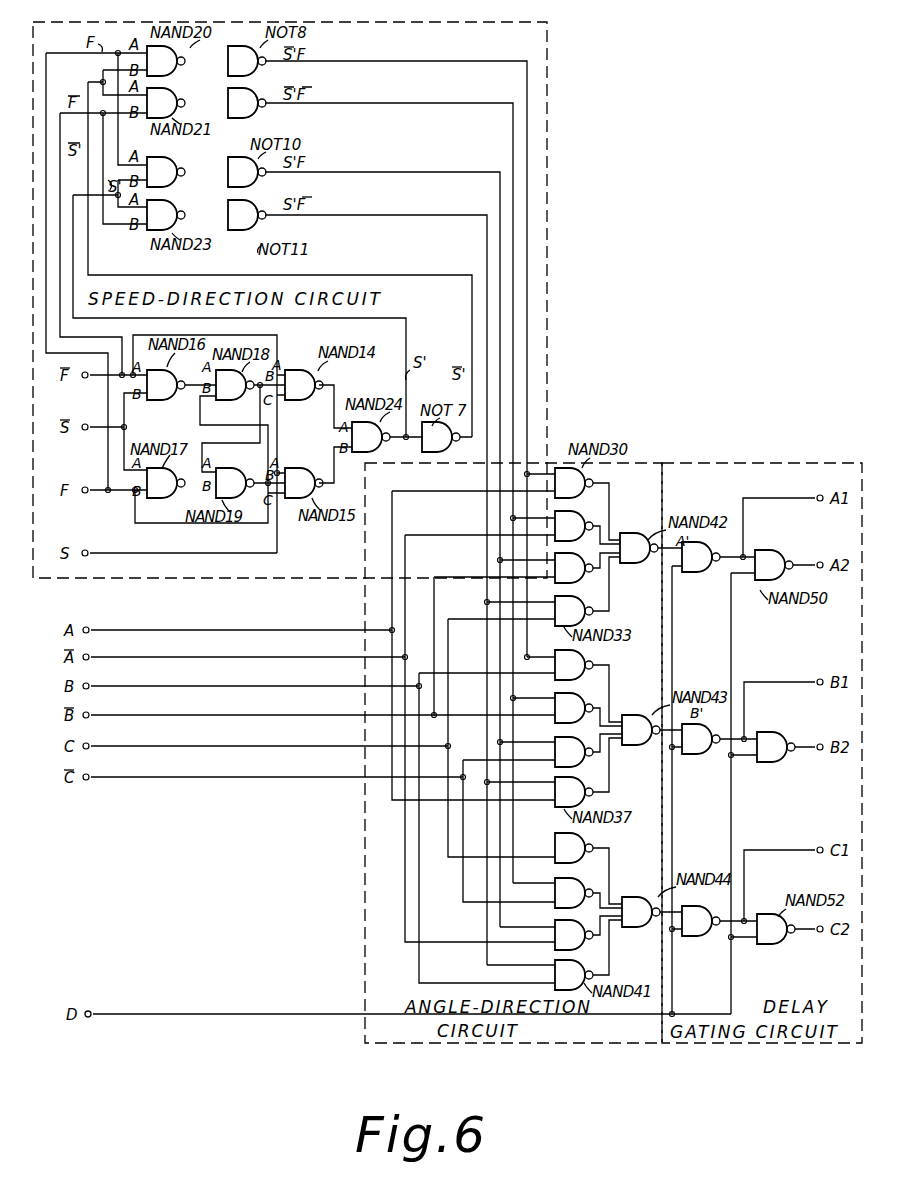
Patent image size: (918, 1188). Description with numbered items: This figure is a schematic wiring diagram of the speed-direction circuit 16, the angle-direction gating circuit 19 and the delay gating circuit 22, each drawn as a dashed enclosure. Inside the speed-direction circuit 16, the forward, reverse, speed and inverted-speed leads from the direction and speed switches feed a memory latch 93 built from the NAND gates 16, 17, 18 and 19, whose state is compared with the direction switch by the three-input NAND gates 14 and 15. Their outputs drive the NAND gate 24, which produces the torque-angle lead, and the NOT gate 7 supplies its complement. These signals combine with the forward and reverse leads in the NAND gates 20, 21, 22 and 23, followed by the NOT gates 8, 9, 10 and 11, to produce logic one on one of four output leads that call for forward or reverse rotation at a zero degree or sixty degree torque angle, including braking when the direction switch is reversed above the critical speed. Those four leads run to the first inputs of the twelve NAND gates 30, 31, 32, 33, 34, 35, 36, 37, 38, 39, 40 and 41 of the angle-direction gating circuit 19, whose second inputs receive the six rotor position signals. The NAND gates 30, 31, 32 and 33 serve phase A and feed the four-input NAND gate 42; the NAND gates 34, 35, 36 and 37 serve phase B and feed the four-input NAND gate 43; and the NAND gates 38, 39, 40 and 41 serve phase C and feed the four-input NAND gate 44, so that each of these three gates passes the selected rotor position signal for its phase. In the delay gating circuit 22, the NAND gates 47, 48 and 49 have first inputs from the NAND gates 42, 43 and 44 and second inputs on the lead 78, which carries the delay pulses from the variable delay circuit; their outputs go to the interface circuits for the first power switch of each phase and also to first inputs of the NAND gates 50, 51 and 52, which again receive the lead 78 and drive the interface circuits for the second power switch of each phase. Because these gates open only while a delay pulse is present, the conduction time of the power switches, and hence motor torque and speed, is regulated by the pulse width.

The NOT gate NOT7 7 is at (441, 437).
The NOT gate NOT8 8 is at (247, 61).
The NOT gate NOT9 9 is at (247, 103).
The NOT gate NOT10 10 is at (247, 172).
The NOT gate NOT11 11 is at (247, 215).
The three-input NAND gate NAND14 14 is at (304, 385).
The three-input NAND gate NAND15 15 is at (304, 483).
The speed-direction circuit 16 is at (578, 255).
The NAND gate NAND17 17 is at (166, 483).
The NAND gate NAND18 18 is at (235, 385).
The angle-direction gating circuit 19 is at (436, 1074).
The NAND gate NAND20 20 is at (166, 61).
The NAND gate NAND21 21 is at (166, 103).
The delay gating circuit 22 is at (738, 1062).
The NAND gate NAND23 23 is at (166, 215).
The NAND gate NAND24 24 is at (371, 437).
The NAND gate NAND30 30 is at (574, 483).
The NAND gate NAND31 31 is at (574, 526).
The NAND gate NAND32 32 is at (574, 568).
The NAND gate NAND33 33 is at (574, 611).
The NAND gate NAND34 34 is at (574, 665).
The NAND gate NAND35 35 is at (574, 708).
The NAND gate NAND36 36 is at (574, 752).
The NAND gate NAND37 37 is at (574, 792).
The NAND gate NAND38 38 is at (574, 848).
The NAND gate NAND39 39 is at (574, 893).
The NAND gate NAND40 40 is at (574, 935).
The NAND gate NAND41 41 is at (574, 975).
The four-input NAND gate NAND42 42 is at (639, 548).
The four-input NAND gate NAND43 43 is at (641, 730).
The four-input NAND gate NAND44 44 is at (641, 912).
The NAND gate NAND47 47 is at (701, 557).
The NAND gate NAND48 48 is at (701, 739).
The NAND gate NAND49 49 is at (701, 921).
The NAND gate NAND50 50 is at (774, 565).
The NAND gate NAND51 51 is at (776, 747).
The NAND gate NAND52 52 is at (776, 929).
The lead 78 is at (195, 1016).
The memory latch 93 is at (175, 433).